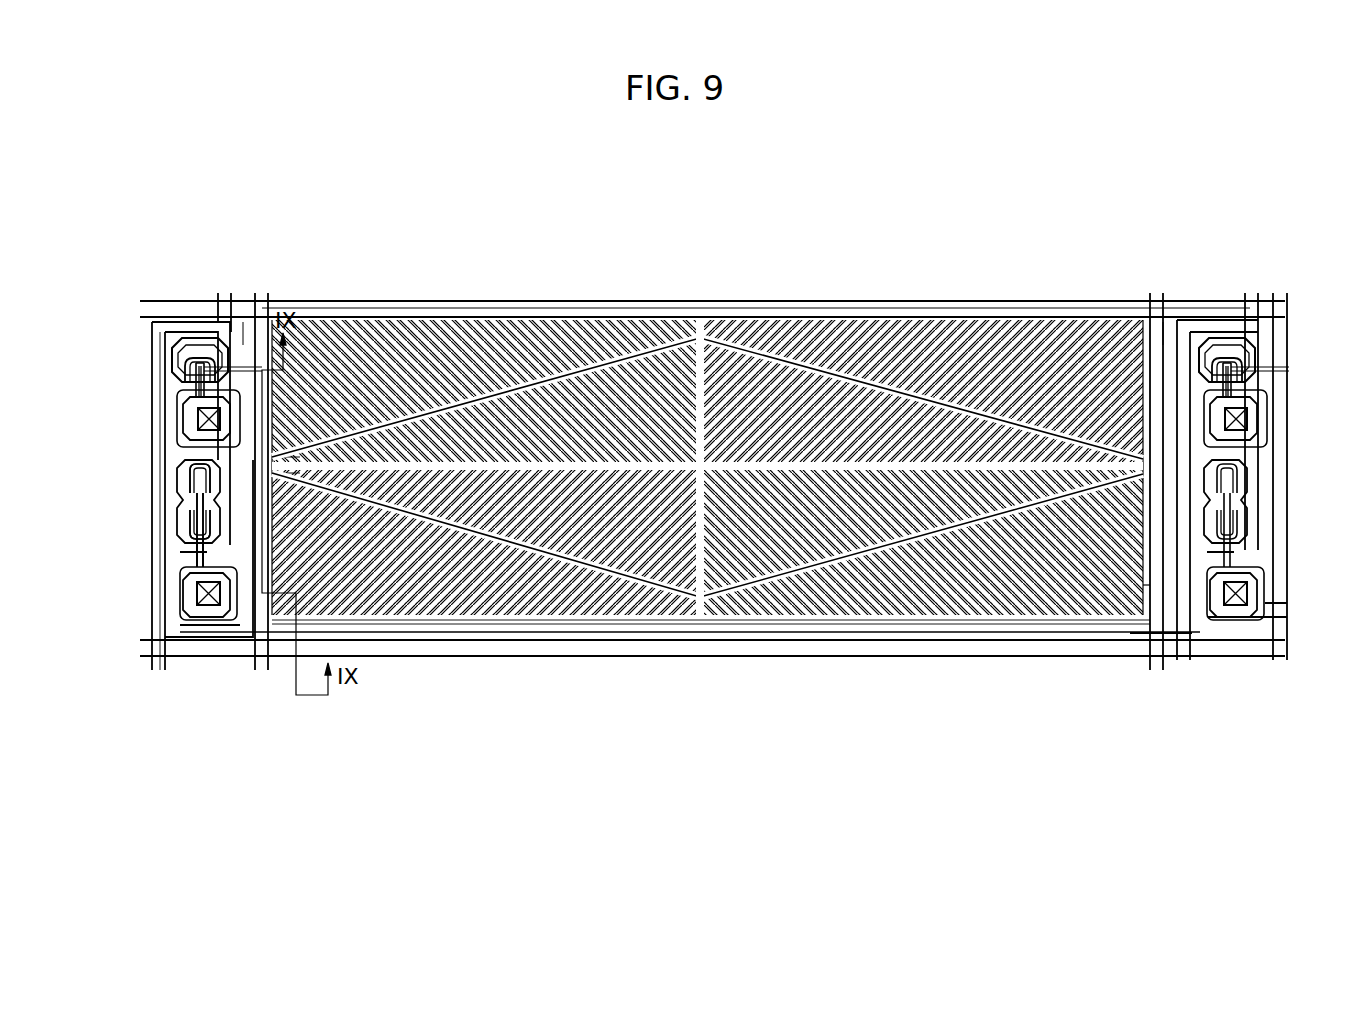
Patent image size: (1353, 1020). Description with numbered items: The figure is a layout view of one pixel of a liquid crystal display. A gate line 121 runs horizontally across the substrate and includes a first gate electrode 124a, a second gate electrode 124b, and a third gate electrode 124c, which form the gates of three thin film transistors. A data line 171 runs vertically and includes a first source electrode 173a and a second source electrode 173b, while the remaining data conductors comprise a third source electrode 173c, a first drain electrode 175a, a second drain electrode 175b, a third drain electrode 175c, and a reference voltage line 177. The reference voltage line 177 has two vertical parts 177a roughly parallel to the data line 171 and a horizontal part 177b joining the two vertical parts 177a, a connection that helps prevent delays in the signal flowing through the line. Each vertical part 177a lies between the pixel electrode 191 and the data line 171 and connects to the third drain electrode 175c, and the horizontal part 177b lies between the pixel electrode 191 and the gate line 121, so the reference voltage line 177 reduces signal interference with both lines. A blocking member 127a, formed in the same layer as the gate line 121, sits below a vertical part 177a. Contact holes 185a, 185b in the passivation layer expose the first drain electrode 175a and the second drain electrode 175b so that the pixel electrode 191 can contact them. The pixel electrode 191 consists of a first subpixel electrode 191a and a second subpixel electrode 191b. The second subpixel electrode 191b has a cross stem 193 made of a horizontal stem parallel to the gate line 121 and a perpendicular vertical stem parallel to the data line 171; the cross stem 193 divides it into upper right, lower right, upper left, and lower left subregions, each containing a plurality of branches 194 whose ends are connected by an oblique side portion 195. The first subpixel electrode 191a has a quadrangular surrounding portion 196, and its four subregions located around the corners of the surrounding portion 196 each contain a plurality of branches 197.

The gate line 121 is at (480, 650).
The first gate electrode 124a is at (245, 540).
The second gate electrode 124b is at (275, 465).
The third gate electrode 124c is at (208, 336).
The blocking member 127a is at (247, 328).
The data line 171 is at (170, 346).
The first source electrode 173a is at (182, 520).
The second source electrode 173b is at (182, 488).
The third source electrode 173c is at (188, 372).
The first drain electrode 175a is at (192, 556).
The second drain electrode 175b is at (200, 448).
The third drain electrode 175c is at (192, 336).
The reference voltage line 177 is at (752, 489).
The vertical part of reference voltage line 177a is at (249, 328).
The horizontal part of reference voltage line 177b is at (1015, 634).
The contact hole 185a is at (190, 600).
The contact hole 185b is at (195, 415).
The pixel electrode 191 is at (707, 494).
The first subpixel electrode 191a is at (625, 622).
The second subpixel electrode 191b is at (710, 600).
The cross stem 193 is at (700, 360).
The branches 194 is at (668, 368).
The oblique side portion 195 is at (592, 375).
The surrounding portion 196 is at (413, 312).
The branches 197 is at (480, 338).